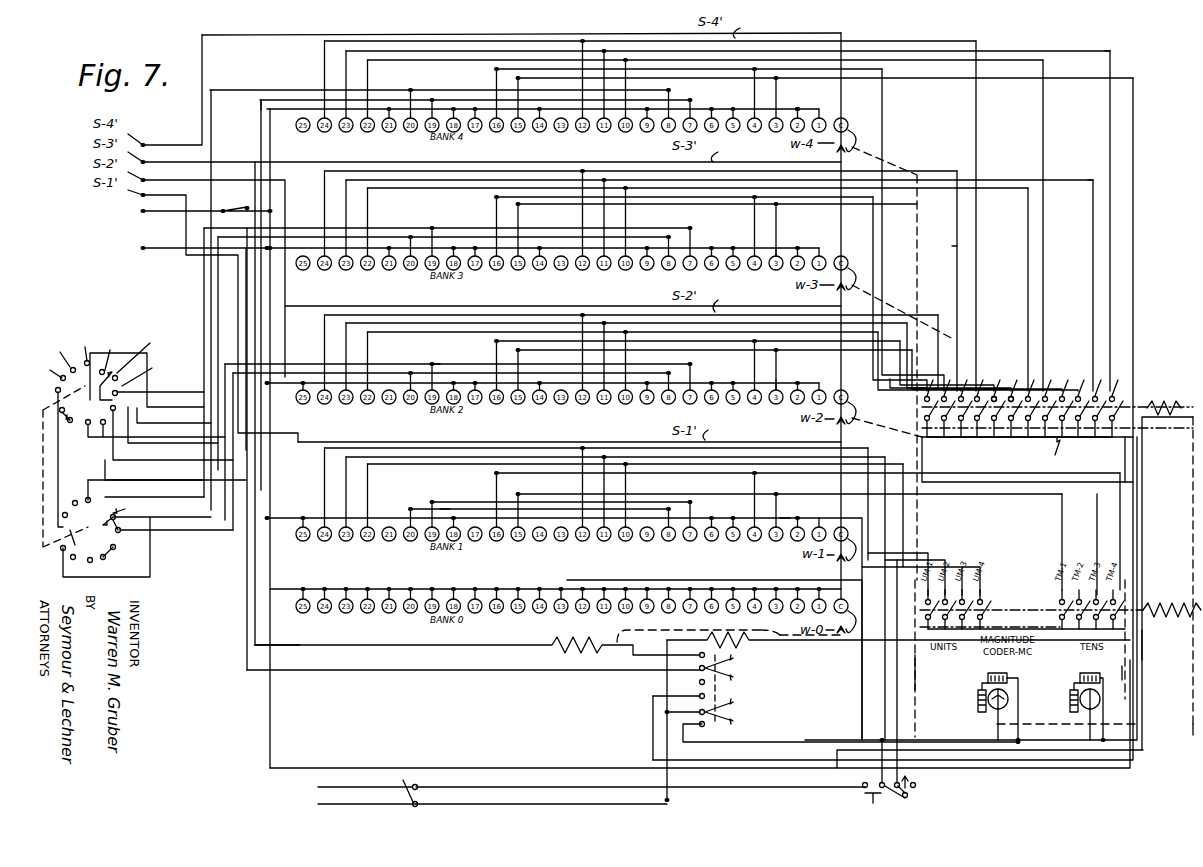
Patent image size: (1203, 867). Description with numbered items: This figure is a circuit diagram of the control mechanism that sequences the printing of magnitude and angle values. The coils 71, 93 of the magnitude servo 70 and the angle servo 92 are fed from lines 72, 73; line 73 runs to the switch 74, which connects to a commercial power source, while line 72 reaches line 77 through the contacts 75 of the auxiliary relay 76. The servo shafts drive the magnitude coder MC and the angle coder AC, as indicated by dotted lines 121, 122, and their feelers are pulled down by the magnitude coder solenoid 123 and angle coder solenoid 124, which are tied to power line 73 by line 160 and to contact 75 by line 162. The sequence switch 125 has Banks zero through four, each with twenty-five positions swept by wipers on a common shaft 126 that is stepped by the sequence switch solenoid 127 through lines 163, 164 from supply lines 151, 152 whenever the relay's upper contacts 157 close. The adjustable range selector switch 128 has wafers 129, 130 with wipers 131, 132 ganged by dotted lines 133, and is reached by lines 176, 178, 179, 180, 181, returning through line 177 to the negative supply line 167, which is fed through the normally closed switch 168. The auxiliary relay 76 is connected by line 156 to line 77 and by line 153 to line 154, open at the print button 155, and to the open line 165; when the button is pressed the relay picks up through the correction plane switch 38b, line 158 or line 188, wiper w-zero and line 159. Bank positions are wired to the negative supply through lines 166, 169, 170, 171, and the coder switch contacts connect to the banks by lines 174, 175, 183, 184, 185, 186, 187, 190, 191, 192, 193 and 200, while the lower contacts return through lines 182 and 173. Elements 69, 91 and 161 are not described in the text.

The line 200 is at (1112, 57).
The line 175 is at (884, 100).
The common operating shaft 126 is at (906, 158).
The line 185 is at (1093, 180).
The line 187 is at (958, 247).
The line 166 is at (799, 107).
The line 180 is at (447, 92).
The negative supply line 167 is at (270, 152).
The normally closed switch 168 is at (244, 209).
The supply line 151 is at (133, 211).
The supply line 152 is at (143, 248).
The line 190 is at (694, 211).
The line 171 is at (779, 251).
The line 183 is at (998, 378).
The line 184 is at (1007, 335).
The line 186 is at (891, 379).
The line 178 is at (462, 360).
The line 174 is at (701, 358).
The line 169 is at (788, 380).
The line 182 is at (1130, 464).
The angle coder solenoid 124 is at (1163, 400).
The dotted line 122 is at (1166, 428).
The magnitude coder solenoid 123 is at (1170, 599).
The conductor 161 is at (1143, 643).
The line 160 is at (1190, 731).
The line 173 is at (1095, 768).
The line 176 is at (450, 509).
The line 170 is at (785, 519).
The line 191 is at (920, 573).
The line 192 is at (940, 572).
The line 193 is at (966, 572).
The line 165 is at (538, 588).
The line 163 is at (300, 645).
The line 164 is at (275, 670).
The line 153 is at (805, 637).
The line 188 is at (868, 670).
The line 158 is at (915, 664).
The line 154 is at (862, 694).
The line 159 is at (875, 714).
The line 156 is at (667, 684).
The upper contacts 157 is at (742, 668).
The contacts 75 is at (742, 712).
The line 77 is at (653, 724).
The line 72 is at (803, 739).
The line 162 is at (750, 760).
The switch 74 is at (403, 772).
The line 73 is at (540, 768).
The coil 93 is at (988, 672).
The angle servo 92 is at (985, 701).
The servo winding 91 is at (980, 708).
The coil 71 is at (1078, 671).
The magnitude servo 70 is at (1068, 701).
The servo winding 69 is at (1075, 708).
The dotted line 121 is at (1122, 666).
The sequence switch solenoid 127 is at (477, 649).
The sequence switch 125 is at (598, 668).
The auxiliary relay 76 is at (898, 642).
The print button 155 is at (863, 797).
The correction plane switch 38b is at (913, 795).
The range selector switch 128 is at (152, 321).
The upper wafer 129 is at (130, 440).
The lower wafer 130 is at (108, 517).
The wiper 131 is at (140, 399).
The wiper 132 is at (120, 565).
The dotted lines 133 is at (68, 476).
The line 177 is at (194, 395).
The line 179 is at (101, 446).
The line 181 is at (65, 494).
The angle coder AC is at (1055, 419).